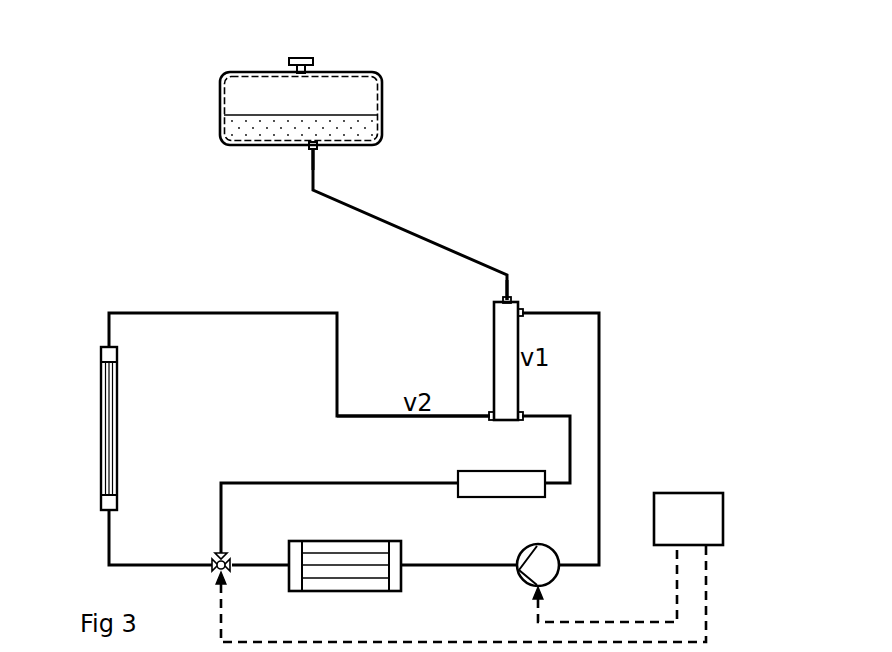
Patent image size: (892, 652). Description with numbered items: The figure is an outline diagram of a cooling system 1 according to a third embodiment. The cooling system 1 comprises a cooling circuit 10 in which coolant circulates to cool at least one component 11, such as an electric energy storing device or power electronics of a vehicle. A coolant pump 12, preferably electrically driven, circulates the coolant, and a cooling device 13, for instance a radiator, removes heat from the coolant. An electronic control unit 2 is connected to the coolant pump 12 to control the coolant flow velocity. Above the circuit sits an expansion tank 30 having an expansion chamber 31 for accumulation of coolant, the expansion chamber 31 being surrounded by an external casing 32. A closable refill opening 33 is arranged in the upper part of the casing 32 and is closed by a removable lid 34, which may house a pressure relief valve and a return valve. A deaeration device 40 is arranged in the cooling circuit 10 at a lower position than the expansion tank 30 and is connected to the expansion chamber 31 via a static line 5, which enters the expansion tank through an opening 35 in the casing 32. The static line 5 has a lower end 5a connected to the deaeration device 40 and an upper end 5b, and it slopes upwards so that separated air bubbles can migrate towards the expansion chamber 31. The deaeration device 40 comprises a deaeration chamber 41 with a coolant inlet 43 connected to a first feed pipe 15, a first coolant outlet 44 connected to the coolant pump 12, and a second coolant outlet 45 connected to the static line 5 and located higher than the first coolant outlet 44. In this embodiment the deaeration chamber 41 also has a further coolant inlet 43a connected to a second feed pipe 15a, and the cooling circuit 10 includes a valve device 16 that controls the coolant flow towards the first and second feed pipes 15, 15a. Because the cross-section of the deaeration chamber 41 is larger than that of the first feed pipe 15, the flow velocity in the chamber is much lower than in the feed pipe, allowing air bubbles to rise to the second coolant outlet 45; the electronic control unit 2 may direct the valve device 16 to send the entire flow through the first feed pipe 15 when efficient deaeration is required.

The cooling system 1 is at (540, 200).
The electronic control unit 2 is at (708, 504).
The static line 5 is at (373, 218).
The lower end of static line 5a is at (502, 289).
The upper end of static line 5b is at (323, 148).
The cooling circuit 10 is at (203, 287).
The component 11 is at (318, 545).
The coolant pump 12 is at (544, 559).
The cooling device 13 is at (115, 393).
The first feed pipe 15 is at (427, 418).
The second feed pipe 15a is at (548, 413).
The valve device 16 is at (216, 552).
The expansion tank 30 is at (200, 94).
The expansion chamber 31 is at (367, 96).
The external casing 32 is at (384, 110).
The refill opening 33 is at (299, 77).
The removable lid 34 is at (298, 57).
The opening 35 is at (306, 149).
The deaeration device 40 is at (470, 357).
The deaeration chamber 41 is at (500, 332).
The coolant inlet 43 is at (488, 420).
The further coolant inlet 43a is at (521, 421).
The first coolant outlet 44 is at (523, 314).
The second coolant outlet 45 is at (509, 297).